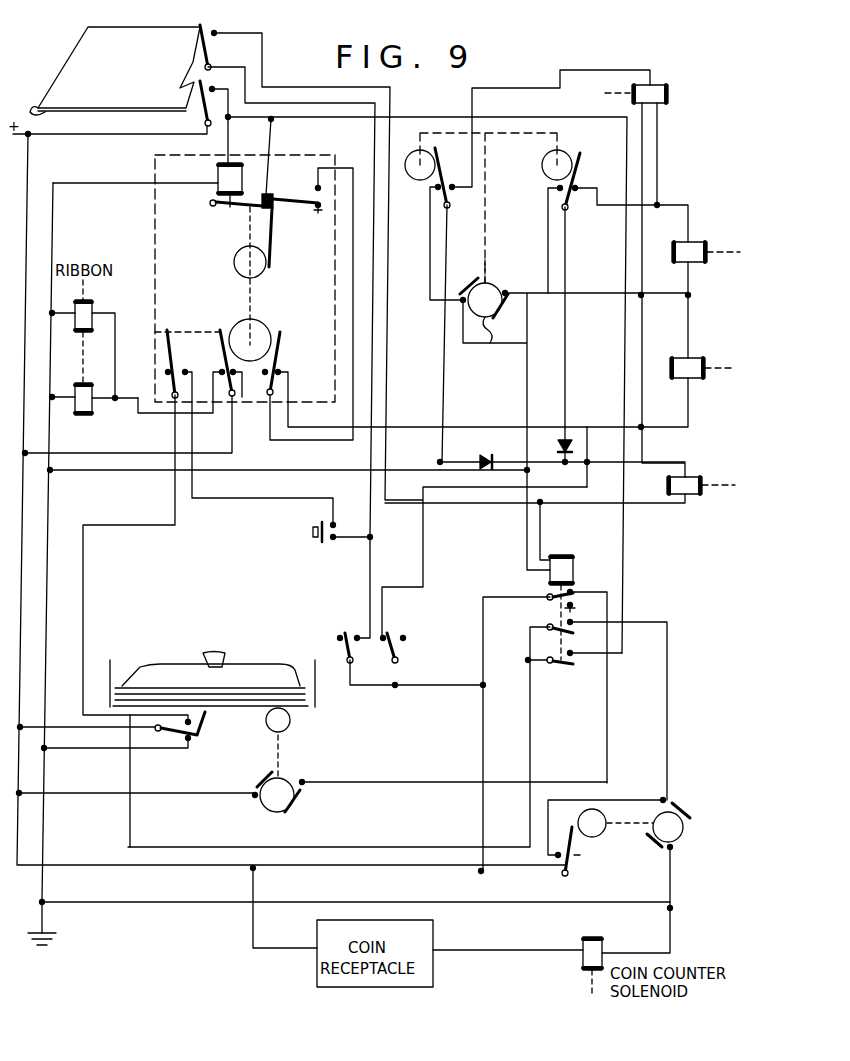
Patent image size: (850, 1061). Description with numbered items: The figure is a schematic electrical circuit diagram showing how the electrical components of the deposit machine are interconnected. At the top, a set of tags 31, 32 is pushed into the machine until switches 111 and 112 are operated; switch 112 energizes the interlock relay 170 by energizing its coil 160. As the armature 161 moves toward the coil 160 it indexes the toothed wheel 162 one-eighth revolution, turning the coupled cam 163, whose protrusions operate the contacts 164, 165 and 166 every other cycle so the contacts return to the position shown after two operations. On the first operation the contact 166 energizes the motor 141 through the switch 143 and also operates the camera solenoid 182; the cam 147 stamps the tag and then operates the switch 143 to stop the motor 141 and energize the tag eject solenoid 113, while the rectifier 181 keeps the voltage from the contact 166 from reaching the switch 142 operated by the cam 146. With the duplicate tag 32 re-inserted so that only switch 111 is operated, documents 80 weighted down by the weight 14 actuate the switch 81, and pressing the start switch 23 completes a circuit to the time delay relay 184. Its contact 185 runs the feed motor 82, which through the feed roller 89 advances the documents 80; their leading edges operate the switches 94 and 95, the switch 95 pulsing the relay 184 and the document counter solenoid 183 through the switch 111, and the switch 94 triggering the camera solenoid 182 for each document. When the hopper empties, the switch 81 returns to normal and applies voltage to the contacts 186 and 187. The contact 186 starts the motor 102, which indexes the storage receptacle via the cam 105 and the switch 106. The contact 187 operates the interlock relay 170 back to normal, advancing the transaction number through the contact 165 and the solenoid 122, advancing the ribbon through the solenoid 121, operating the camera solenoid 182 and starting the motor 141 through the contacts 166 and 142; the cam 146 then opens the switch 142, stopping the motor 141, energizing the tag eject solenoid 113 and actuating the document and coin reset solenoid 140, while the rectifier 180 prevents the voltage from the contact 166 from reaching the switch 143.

The tag 31 is at (62, 66).
The tag 32 is at (40, 110).
The switch 111 is at (212, 38).
The switch 112 is at (200, 108).
The interlock relay 170 is at (155, 236).
The coil 160 is at (218, 180).
The armature 161 is at (272, 240).
The toothed wheel 162 is at (258, 273).
The cam 163 is at (256, 322).
The contact 164 is at (162, 341).
The contact 165 is at (206, 340).
The contact 166 is at (284, 338).
The solenoid 121 is at (92, 308).
The solenoid 122 is at (90, 402).
The cam 147 is at (410, 176).
The switch 143 is at (464, 208).
The cam 146 is at (542, 164).
The switch 142 is at (578, 184).
The motor 141 is at (490, 283).
The solenoid 113 is at (668, 100).
The document and coin reset solenoid 140 is at (702, 262).
The camera solenoid 182 is at (694, 378).
The document counter solenoid 183 is at (694, 498).
The rectifier 181 is at (572, 434).
The rectifier 180 is at (482, 457).
The start switch 23 is at (310, 530).
The switch 95 is at (352, 632).
The switch 94 is at (392, 632).
The time delay relay 184 is at (574, 569).
The contact 185 is at (550, 602).
The contact 186 is at (546, 632).
The contact 187 is at (562, 666).
The documents 80 is at (113, 683).
The weight 14 is at (163, 665).
The switch 81 is at (203, 727).
The feed roller 89 is at (291, 720).
The feed motor 82 is at (266, 803).
The cam 105 is at (597, 836).
The switch 106 is at (570, 864).
The motor 102 is at (682, 826).